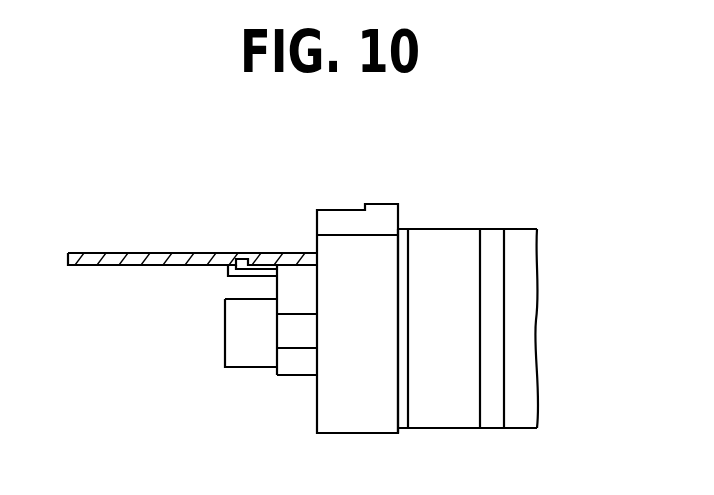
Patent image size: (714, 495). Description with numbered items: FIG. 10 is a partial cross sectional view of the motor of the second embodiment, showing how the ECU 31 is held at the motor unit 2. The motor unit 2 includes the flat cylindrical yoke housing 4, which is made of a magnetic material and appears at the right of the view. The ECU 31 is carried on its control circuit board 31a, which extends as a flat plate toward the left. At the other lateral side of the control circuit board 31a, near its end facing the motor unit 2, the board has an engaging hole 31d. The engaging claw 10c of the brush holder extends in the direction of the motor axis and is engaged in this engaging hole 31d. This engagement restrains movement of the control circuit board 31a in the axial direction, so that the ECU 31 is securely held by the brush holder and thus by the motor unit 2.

The motor unit 2 is at (450, 228).
The yoke housing 4 is at (438, 418).
The ECU 31 is at (82, 252).
The control circuit board 31a is at (137, 252).
The engaging hole 31d is at (230, 252).
The engaging claw 10c is at (233, 273).